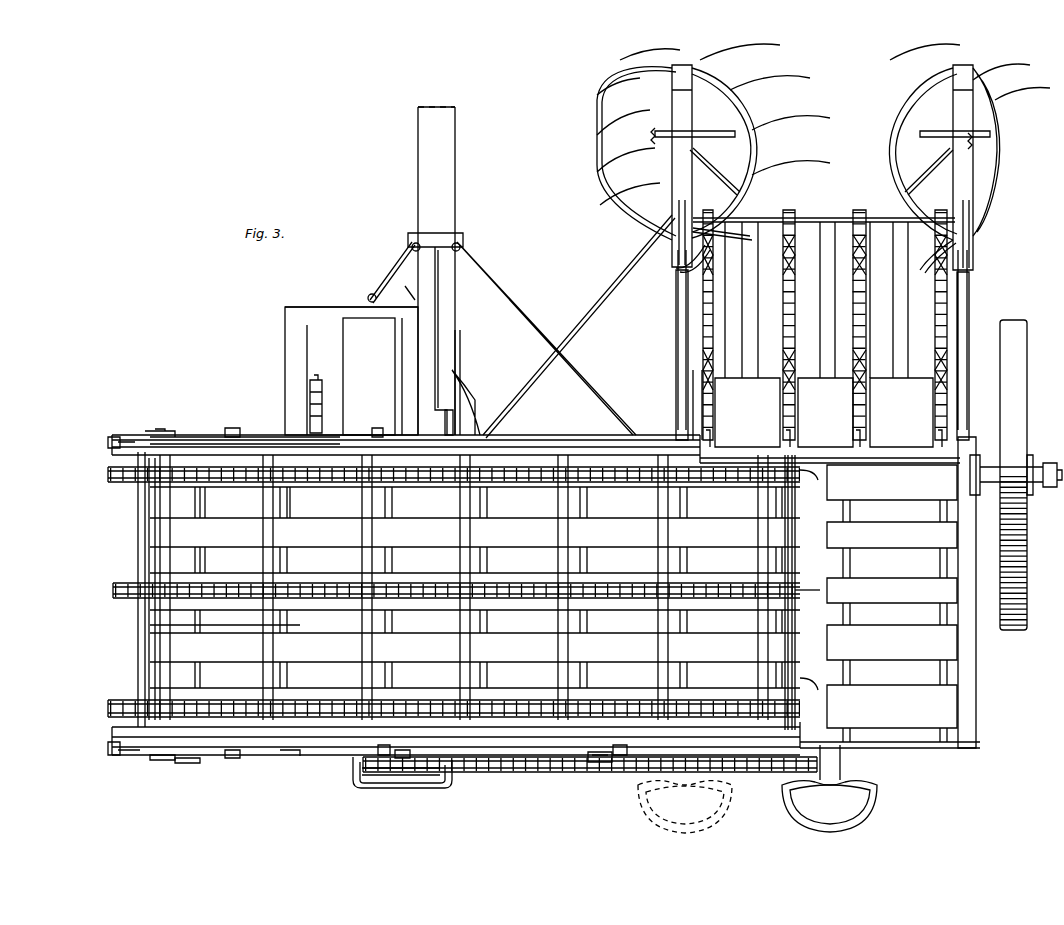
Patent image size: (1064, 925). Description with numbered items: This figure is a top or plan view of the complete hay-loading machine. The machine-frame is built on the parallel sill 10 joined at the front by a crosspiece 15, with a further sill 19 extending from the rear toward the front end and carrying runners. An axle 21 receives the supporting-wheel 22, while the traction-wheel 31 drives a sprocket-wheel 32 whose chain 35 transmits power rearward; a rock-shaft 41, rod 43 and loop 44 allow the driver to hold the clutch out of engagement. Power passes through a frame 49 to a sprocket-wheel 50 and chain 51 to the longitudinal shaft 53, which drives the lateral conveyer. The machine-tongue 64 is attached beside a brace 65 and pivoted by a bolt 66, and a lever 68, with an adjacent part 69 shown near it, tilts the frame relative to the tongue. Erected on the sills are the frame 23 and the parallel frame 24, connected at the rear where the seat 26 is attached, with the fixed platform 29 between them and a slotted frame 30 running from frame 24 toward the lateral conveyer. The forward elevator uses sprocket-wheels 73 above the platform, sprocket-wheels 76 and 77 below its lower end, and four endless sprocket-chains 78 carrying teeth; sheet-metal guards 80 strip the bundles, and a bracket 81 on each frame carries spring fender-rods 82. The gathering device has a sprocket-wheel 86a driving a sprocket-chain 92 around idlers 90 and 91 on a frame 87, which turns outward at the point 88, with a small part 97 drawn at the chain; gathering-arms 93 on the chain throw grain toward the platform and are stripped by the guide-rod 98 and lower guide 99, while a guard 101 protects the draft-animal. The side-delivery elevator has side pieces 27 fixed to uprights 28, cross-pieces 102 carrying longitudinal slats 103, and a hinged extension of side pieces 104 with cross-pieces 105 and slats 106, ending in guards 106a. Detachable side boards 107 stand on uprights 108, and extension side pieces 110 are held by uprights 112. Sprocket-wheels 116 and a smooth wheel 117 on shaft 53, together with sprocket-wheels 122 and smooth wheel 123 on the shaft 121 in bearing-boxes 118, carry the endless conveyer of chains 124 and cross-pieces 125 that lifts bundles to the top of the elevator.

The sill 10 is at (287, 342).
The crosspiece 15 is at (320, 305).
The sill 19 is at (795, 238).
The axle 21 is at (1055, 463).
The supporting-wheel 22 is at (1010, 386).
The frame 23 is at (625, 340).
The frame 24 is at (978, 666).
The seat 26 is at (783, 800).
The side pieces 27 is at (560, 440).
The uprights 28 is at (302, 755).
The fixed platform 29 is at (820, 218).
The slotted frame 30 is at (892, 603).
The traction-wheel 31 is at (369, 376).
The sprocket-wheel 32 is at (316, 375).
The chain 35 is at (322, 400).
The rock-shaft 41 is at (333, 764).
The rod 43 is at (505, 758).
The loop 44 is at (598, 765).
The frame 49 is at (368, 782).
The sprocket-wheel 50 is at (362, 770).
The chain 51 is at (560, 765).
The shaft 53 is at (792, 565).
The machine-tongue 64 is at (435, 271).
The brace 65 is at (476, 395).
The bolt 66 is at (462, 352).
The lever 68 is at (439, 422).
The rod 69 is at (445, 385).
The sprocket-wheels 73 is at (712, 438).
The sprocket-wheels 76 is at (675, 210).
The sprocket-wheels 77 is at (789, 210).
The endless sprocket-chains 78 is at (935, 282).
The sheet-metal guards 80 is at (824, 412).
The bracket 81 is at (972, 214).
The spring fender-rods 82 is at (675, 362).
The sprocket-wheel 86a is at (952, 181).
The frame 87 is at (715, 112).
The point 88 is at (738, 215).
The sprocket-wheel idler 90 is at (715, 130).
The sprocket-wheel idler 91 is at (735, 185).
The sprocket-chain 92 is at (645, 125).
The gathering-arms 93 is at (645, 183).
The ratchet 97 is at (658, 142).
The guide-rod 98 is at (700, 250).
The guide 99 is at (725, 232).
The guard 101 is at (600, 118).
The cross-pieces 102 is at (300, 568).
The longitudinal slats 103 is at (520, 638).
The extension side pieces 104 is at (190, 437).
The cross-pieces 105 is at (280, 620).
The slats 106 is at (224, 493).
The guards 106a is at (112, 437).
The side boards 107 is at (500, 447).
The uprights 108 is at (378, 428).
The extension side pieces 110 is at (125, 441).
The uprights 112 is at (233, 428).
The sprocket-wheels 116 is at (818, 482).
The smooth wheel 117 is at (805, 598).
The bearing-boxes 118 is at (155, 431).
The shaft 121 is at (178, 760).
The sprocket-wheels 122 is at (118, 474).
The smooth wheel 123 is at (118, 583).
The chains 124 is at (612, 482).
The cross-pieces 125 is at (575, 668).